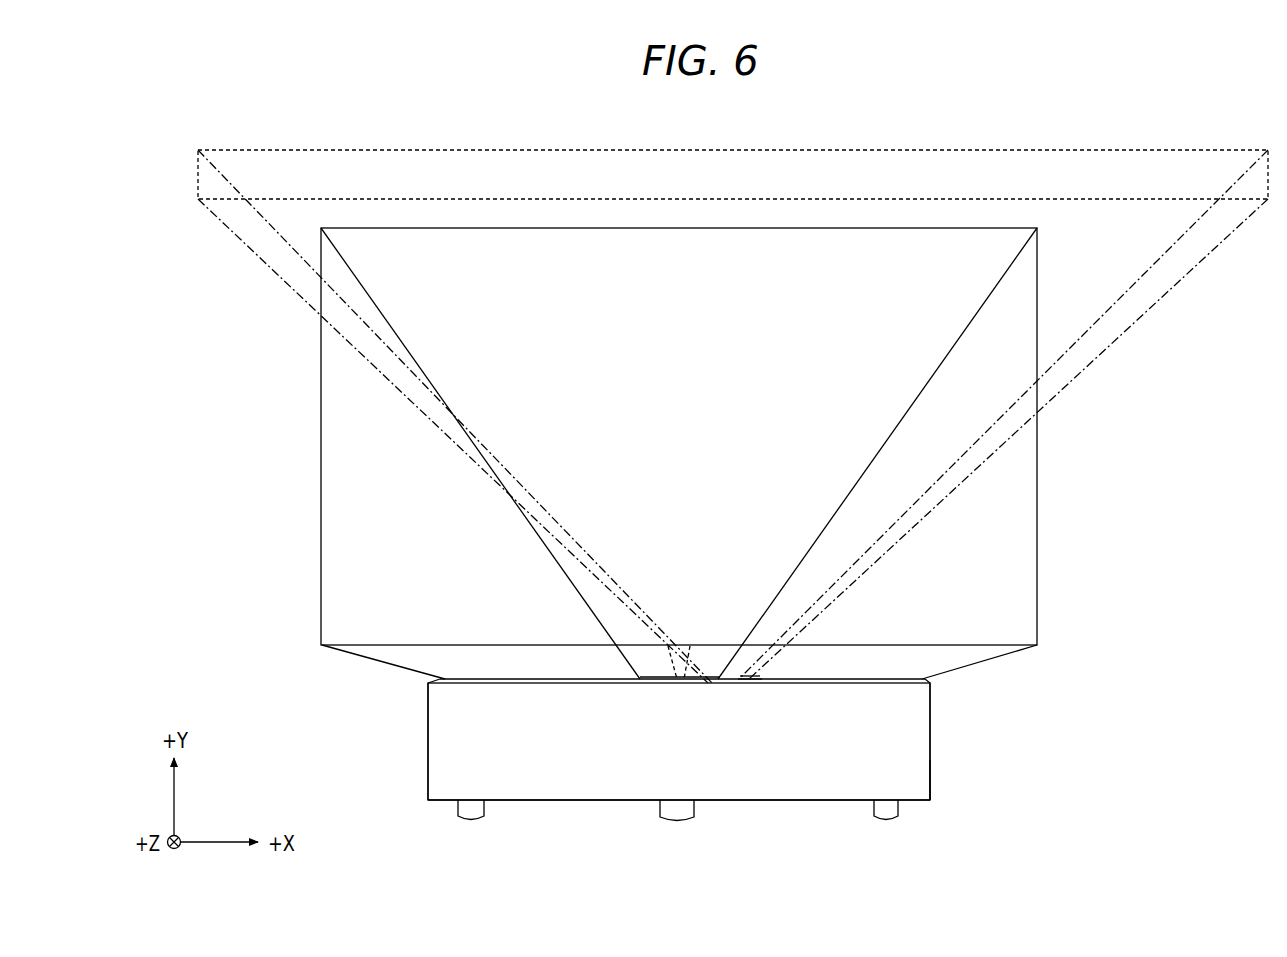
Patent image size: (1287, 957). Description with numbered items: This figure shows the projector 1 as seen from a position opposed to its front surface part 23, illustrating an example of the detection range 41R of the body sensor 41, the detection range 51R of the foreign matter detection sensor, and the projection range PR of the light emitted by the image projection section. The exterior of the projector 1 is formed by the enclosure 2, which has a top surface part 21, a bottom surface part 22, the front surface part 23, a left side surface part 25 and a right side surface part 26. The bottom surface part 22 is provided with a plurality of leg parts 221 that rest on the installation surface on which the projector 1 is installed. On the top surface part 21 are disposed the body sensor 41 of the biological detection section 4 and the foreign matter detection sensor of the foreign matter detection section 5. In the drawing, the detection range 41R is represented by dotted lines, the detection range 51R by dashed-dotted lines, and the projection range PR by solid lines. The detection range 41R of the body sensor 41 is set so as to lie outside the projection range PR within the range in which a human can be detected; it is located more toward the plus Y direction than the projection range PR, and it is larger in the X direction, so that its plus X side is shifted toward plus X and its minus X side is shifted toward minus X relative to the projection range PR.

The projector 1 is at (724, 732).
The enclosure 2 is at (931, 706).
The top surface part 21 is at (858, 678).
The bottom surface part 22 is at (780, 803).
The leg parts 221 is at (472, 824).
The front surface part 23 is at (918, 770).
The left side surface part 25 is at (428, 735).
The right side surface part 26 is at (932, 736).
The biological detection section 4 is at (824, 646).
The body sensor 41 is at (762, 677).
The detection range of the body sensor 41R is at (1110, 164).
The foreign matter detection section 5 is at (700, 628).
The detection range of the foreign matter detection sensor 51R is at (671, 668).
The projection range PR is at (1008, 529).